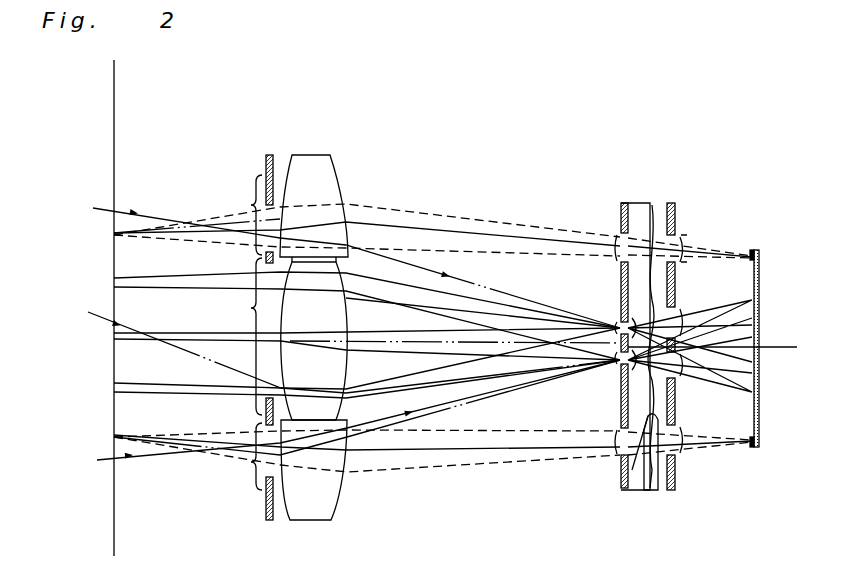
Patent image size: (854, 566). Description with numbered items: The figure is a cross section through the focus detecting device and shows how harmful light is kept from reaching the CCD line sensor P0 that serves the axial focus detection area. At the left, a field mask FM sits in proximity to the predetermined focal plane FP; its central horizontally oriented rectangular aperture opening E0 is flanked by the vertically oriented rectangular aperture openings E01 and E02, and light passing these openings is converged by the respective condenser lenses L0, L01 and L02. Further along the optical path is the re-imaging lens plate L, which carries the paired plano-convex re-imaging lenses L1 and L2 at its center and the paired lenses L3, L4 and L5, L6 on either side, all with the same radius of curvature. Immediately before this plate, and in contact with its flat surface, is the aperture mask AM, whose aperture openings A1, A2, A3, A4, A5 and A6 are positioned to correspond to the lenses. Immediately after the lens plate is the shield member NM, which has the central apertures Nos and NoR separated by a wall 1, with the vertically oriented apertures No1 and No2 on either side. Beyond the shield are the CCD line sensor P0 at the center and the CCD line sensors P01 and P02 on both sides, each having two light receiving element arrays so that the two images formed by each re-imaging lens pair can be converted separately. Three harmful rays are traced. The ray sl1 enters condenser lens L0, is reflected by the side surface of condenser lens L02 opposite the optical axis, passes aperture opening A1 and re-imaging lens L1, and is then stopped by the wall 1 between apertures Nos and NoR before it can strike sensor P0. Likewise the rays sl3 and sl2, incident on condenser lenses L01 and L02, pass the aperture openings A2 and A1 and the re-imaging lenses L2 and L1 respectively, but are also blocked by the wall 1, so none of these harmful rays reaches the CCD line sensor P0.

The predetermined focal plane FP is at (116, 82).
The field mask FM is at (271, 152).
The condenser lens L01 is at (330, 158).
The condenser lens L0 is at (347, 288).
The condenser lens L02 is at (343, 492).
The rectangular aperture opening E01 is at (251, 203).
The rectangular aperture opening E0 is at (250, 307).
The rectangular aperture opening E02 is at (251, 464).
The harmful ray sl1 is at (330, 348).
The harmful ray sl2 is at (332, 417).
The harmful ray sl3 is at (333, 264).
The aperture mask AM is at (622, 203).
The aperture opening A1 is at (614, 363).
The aperture opening A2 is at (614, 326).
The aperture opening A3 is at (576, 228).
The aperture opening A4 is at (614, 237).
The aperture opening A5 is at (580, 466).
The aperture opening A6 is at (614, 440).
The re-imaging lens plate L is at (650, 235).
The re-imaging lens L1 is at (630, 368).
The re-imaging lens L2 is at (622, 284).
The re-imaging lens L3 is at (694, 208).
The re-imaging lens L4 is at (672, 203).
The re-imaging lens L5 is at (672, 484).
The re-imaging lens L6 is at (656, 495).
The wall 1 is at (651, 430).
The shield member NM is at (676, 204).
The aperture No1 is at (688, 262).
The aperture NoR is at (681, 318).
The aperture Nos is at (681, 378).
The aperture No2 is at (681, 452).
The CCD line sensor P0 is at (752, 300).
The CCD line sensor P01 is at (762, 252).
The CCD line sensor P02 is at (757, 447).